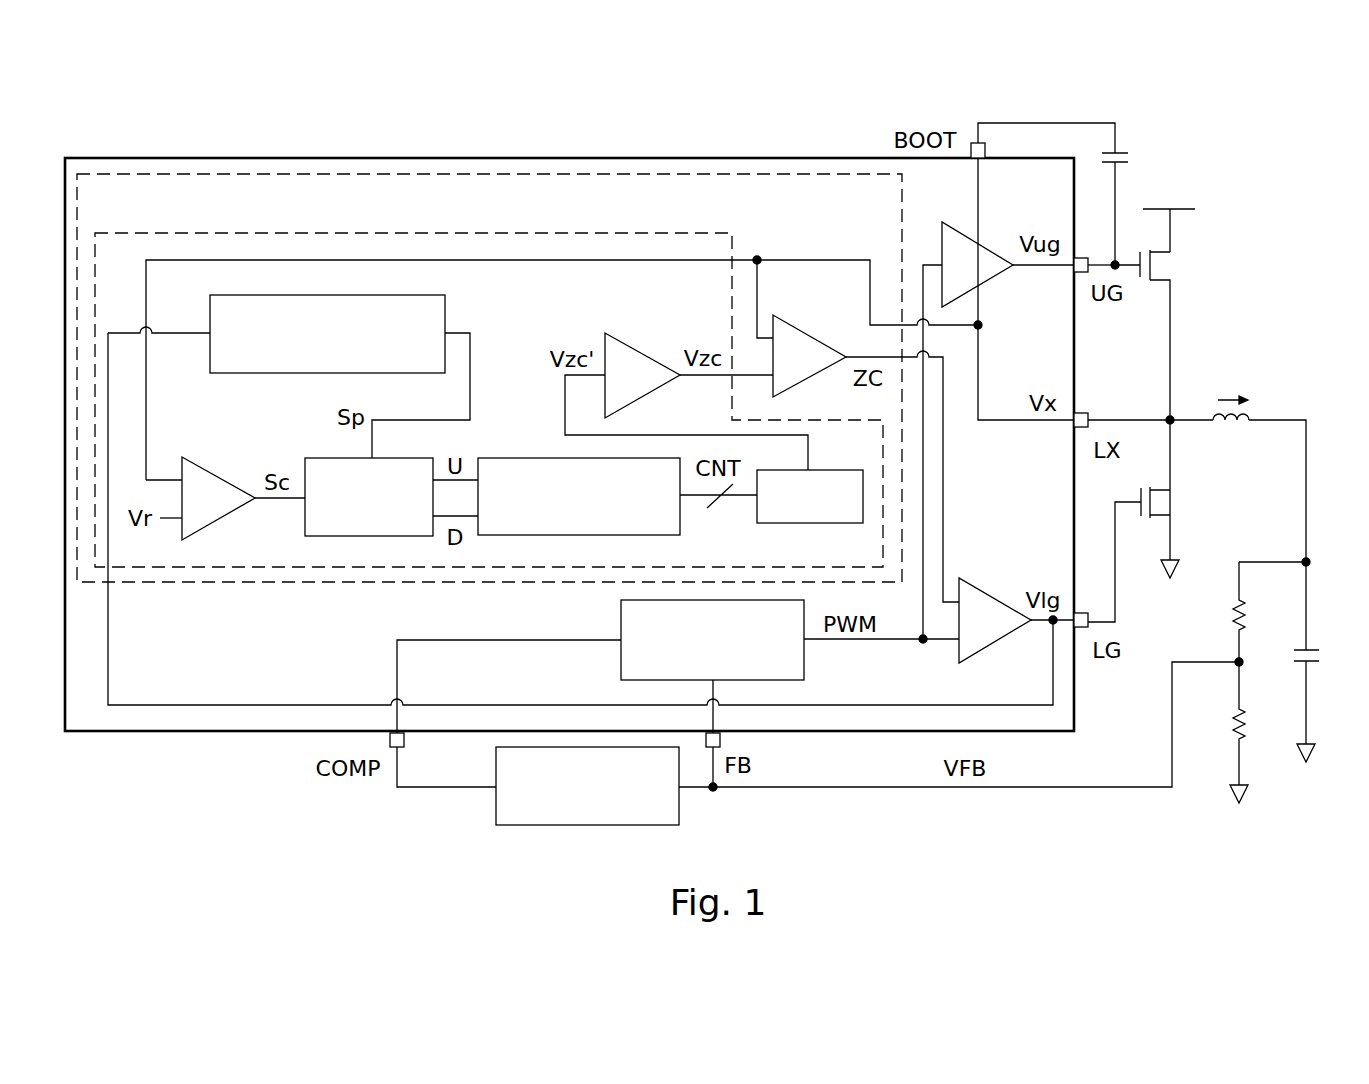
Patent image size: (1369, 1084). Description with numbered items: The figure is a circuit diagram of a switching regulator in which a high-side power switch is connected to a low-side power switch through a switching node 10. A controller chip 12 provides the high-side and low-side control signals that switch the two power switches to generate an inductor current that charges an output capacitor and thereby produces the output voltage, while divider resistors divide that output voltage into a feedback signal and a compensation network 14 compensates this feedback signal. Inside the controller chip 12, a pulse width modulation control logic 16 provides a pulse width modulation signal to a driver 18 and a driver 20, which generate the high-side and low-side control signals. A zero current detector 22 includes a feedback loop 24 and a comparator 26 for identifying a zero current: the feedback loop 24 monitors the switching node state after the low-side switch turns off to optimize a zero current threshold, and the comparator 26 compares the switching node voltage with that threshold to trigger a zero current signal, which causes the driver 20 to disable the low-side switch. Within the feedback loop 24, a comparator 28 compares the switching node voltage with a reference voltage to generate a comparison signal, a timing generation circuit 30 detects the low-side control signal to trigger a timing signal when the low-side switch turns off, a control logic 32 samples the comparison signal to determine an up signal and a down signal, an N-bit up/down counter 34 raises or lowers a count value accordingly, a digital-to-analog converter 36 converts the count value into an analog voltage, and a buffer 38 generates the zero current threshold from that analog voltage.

The switching node 10 is at (1168, 420).
The controller chip 12 is at (195, 731).
The compensation network 14 is at (584, 825).
The pulse width modulation control logic 16 is at (621, 622).
The driver 18 is at (1002, 272).
The driver 20 is at (1000, 601).
The zero current detector 22 is at (193, 583).
The feedback loop 24 is at (255, 567).
The comparator 26 is at (812, 337).
The comparator 28 is at (220, 478).
The timing generation circuit 30 is at (316, 376).
The control logic 32 is at (365, 536).
The N-bit up/down counter 34 is at (538, 457).
The digital-to-analog converter 36 is at (808, 523).
The buffer 38 is at (644, 354).